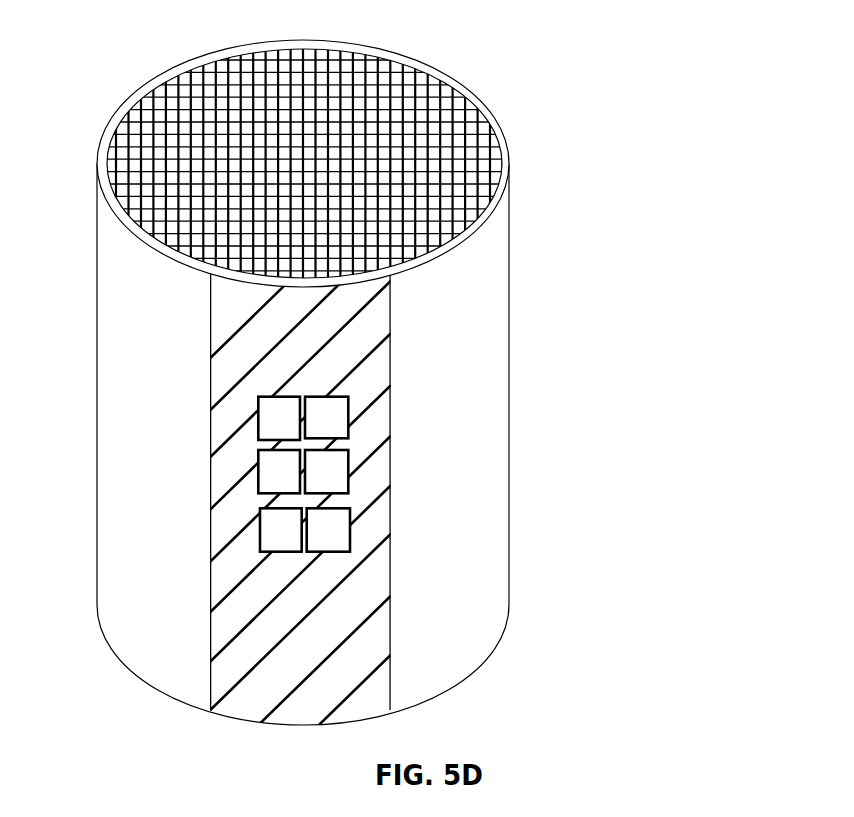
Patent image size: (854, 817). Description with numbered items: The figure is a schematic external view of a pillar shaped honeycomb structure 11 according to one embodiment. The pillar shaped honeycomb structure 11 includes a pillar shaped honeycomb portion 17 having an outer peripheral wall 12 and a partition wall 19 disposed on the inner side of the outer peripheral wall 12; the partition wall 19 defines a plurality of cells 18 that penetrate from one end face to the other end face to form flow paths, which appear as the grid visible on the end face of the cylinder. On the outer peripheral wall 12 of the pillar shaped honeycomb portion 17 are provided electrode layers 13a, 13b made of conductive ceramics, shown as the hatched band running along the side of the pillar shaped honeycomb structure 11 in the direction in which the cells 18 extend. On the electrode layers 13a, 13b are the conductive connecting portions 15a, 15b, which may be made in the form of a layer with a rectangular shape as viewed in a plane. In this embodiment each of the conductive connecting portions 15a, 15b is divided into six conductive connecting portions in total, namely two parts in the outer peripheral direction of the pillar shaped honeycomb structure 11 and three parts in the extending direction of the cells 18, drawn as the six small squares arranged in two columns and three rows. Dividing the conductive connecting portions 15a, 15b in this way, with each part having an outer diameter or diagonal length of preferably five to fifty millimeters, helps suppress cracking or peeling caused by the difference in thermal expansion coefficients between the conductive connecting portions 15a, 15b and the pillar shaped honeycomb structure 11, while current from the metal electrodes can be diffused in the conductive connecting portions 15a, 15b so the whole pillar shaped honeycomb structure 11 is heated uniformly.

The pillar shaped honeycomb structure 11 is at (497, 124).
The outer peripheral wall 12 is at (473, 527).
The electrode layer 13a is at (456, 499).
The electrode layer 13b is at (391, 385).
The conductive connecting portion 15a is at (498, 452).
The conductive connecting portion 15b is at (353, 463).
The pillar shaped honeycomb portion 17 is at (490, 213).
The cell 18 is at (137, 162).
The partition wall 19 is at (173, 133).